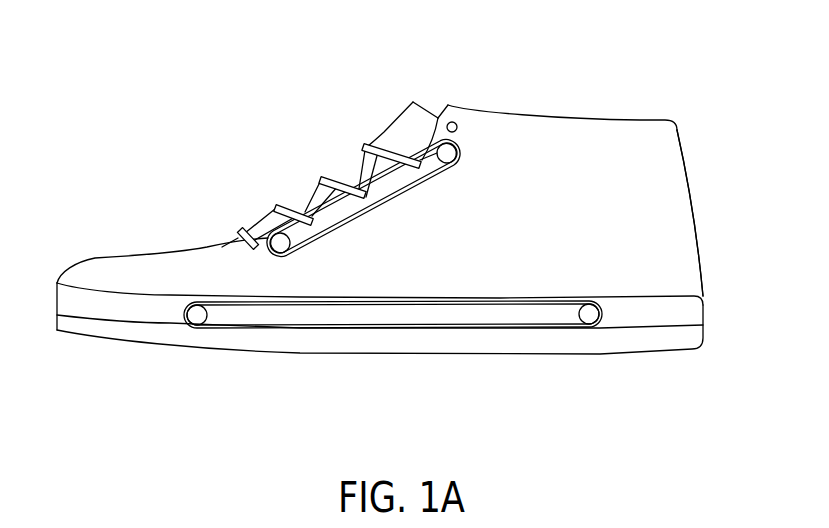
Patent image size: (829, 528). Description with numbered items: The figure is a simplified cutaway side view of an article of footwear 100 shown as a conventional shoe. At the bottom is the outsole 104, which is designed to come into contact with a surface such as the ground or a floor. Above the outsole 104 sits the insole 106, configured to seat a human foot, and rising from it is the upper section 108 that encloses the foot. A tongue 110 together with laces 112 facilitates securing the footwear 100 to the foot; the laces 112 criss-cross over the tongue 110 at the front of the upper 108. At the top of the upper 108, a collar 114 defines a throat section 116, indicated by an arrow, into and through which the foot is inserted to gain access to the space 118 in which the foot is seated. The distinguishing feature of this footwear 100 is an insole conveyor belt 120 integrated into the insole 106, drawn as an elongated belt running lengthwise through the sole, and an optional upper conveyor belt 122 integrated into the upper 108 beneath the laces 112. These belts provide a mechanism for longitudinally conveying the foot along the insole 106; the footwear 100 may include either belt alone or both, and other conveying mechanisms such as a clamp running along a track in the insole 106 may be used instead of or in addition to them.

The footwear 100 is at (688, 205).
The outsole 104 is at (555, 345).
The insole 106 is at (700, 306).
The upper section 108 is at (177, 262).
The tongue 110 is at (450, 108).
The laces 112 is at (335, 180).
The collar 114 is at (668, 143).
The throat section 116 is at (657, 183).
The space 118 is at (368, 283).
The insole conveyor belt 120 is at (267, 318).
The upper conveyor belt 122 is at (408, 188).